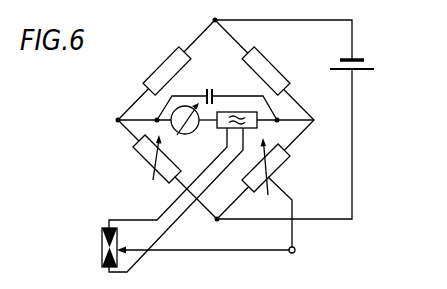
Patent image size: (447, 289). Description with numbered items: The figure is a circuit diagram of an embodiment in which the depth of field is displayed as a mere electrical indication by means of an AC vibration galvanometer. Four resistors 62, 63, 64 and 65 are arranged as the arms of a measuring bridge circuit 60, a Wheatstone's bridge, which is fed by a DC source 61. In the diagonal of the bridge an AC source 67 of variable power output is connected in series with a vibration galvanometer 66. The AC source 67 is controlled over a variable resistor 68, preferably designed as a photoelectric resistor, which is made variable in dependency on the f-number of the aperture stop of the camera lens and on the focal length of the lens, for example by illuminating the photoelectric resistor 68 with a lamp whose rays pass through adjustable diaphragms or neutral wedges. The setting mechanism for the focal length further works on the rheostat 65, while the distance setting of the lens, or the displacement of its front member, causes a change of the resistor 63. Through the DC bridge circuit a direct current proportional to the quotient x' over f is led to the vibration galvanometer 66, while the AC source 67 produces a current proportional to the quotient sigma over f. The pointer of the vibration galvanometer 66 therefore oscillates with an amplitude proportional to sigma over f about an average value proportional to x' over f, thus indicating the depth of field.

The bridge circuit 60 is at (158, 112).
The DC source 61 is at (355, 62).
The resistor 62 is at (163, 64).
The resistor 63 is at (147, 155).
The resistor 64 is at (269, 67).
The rheostat 65 is at (277, 167).
The vibration galvanometer 66 is at (180, 133).
The AC source 67 is at (252, 112).
The variable resistor 68 is at (102, 240).